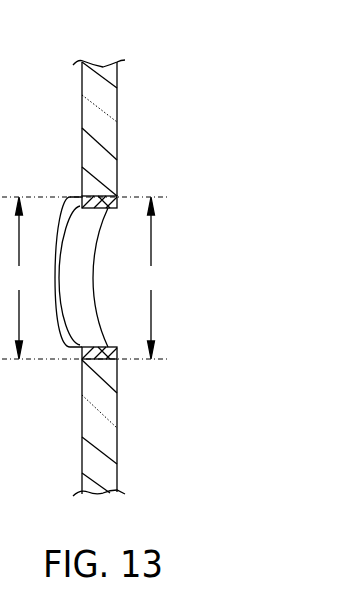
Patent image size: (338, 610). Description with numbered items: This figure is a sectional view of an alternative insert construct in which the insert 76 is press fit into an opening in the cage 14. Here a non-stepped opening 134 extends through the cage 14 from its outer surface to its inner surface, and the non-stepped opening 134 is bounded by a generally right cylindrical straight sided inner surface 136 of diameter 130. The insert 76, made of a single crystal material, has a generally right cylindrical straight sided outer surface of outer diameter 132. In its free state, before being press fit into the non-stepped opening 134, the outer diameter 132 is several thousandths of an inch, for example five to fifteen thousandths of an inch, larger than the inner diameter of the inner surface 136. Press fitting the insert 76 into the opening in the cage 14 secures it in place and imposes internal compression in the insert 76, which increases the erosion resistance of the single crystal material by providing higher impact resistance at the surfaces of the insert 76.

The cage 14 is at (103, 397).
The insert 76 is at (108, 344).
The diameter 130 is at (17, 278).
The outer diameter 132 is at (152, 278).
The non-stepped opening 134 is at (100, 193).
The inner surface 136 is at (97, 360).